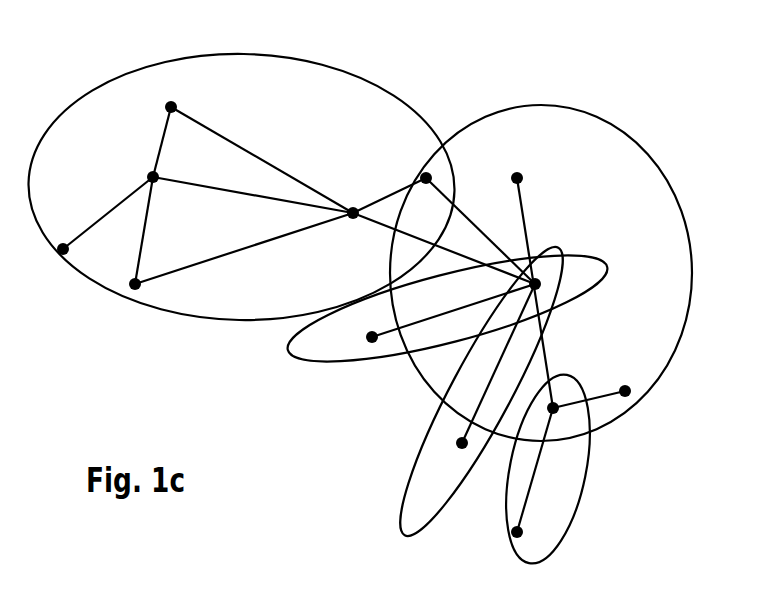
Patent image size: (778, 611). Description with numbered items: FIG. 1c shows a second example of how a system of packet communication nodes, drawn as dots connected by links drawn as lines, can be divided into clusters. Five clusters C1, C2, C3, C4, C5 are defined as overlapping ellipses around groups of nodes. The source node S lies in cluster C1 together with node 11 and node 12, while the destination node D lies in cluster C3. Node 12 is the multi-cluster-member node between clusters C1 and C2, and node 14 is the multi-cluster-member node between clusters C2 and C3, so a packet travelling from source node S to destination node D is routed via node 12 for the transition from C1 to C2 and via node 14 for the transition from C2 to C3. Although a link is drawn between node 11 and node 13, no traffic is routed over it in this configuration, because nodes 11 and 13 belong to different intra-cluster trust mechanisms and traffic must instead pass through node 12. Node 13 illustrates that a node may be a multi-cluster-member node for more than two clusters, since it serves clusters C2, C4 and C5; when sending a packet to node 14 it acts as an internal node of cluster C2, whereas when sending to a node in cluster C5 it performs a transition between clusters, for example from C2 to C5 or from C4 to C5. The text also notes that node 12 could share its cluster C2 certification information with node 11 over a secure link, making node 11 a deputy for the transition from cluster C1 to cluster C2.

The node 11 is at (347, 193).
The multi-cluster-member node 12 is at (442, 168).
The multi-cluster-member node 13 is at (559, 290).
The multi-cluster-member node 14 is at (568, 390).
The source node S is at (61, 239).
The destination node D is at (524, 547).
The cluster C1 is at (241, 184).
The cluster C2 is at (541, 269).
The cluster C3 is at (558, 468).
The cluster C4 is at (444, 321).
The cluster C5 is at (466, 392).